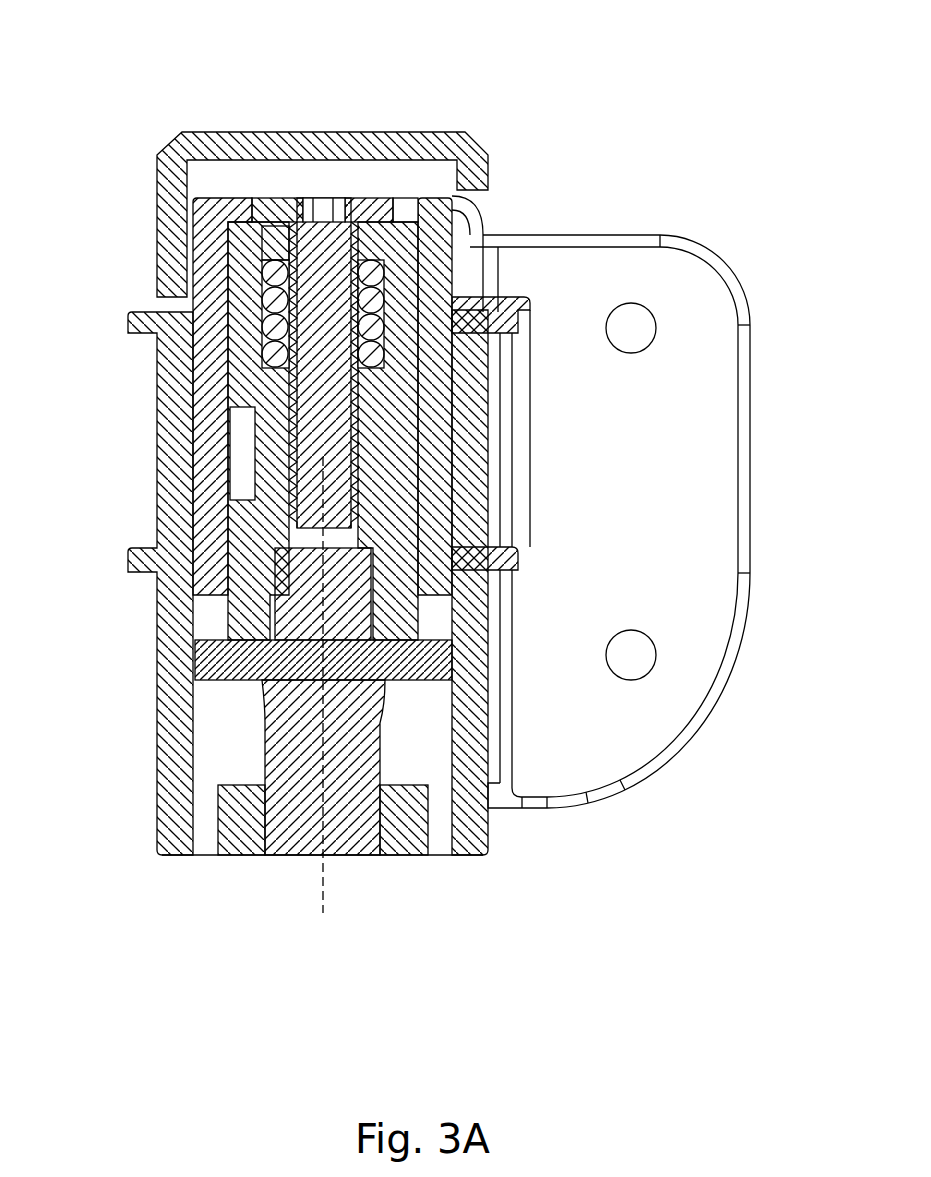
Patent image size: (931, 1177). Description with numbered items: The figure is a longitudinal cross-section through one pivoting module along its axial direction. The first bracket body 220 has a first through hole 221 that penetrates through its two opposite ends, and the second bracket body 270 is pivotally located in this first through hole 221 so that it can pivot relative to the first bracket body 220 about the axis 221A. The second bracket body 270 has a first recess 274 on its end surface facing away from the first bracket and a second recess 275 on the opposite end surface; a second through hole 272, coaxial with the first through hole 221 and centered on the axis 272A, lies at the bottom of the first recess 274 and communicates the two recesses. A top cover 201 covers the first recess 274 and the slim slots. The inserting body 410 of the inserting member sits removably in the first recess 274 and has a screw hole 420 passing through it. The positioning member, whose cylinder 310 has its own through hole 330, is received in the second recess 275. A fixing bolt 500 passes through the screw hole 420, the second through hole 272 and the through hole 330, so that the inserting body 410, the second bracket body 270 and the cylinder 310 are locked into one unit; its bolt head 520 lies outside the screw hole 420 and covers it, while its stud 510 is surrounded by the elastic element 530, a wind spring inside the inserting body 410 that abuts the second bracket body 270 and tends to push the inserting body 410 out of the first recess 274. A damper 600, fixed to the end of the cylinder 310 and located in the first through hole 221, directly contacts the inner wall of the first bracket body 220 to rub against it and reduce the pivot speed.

The top cover 201 is at (415, 145).
The first bracket body 220 is at (264, 582).
The first through hole 221 is at (212, 733).
The central axis 221A is at (323, 888).
The second bracket body 270 is at (435, 483).
The second through hole 272 is at (367, 387).
The axis of the second through hole 272A is at (300, 530).
The first recess 274 is at (412, 200).
The second recess 275 is at (248, 460).
The cylinder 310 is at (240, 600).
The through hole 330 is at (293, 536).
The inserting body 410 is at (229, 431).
The screw hole 420 is at (283, 240).
The fixing bolt 500 is at (310, 266).
The stud 510 is at (322, 213).
The bolt head 520 is at (295, 215).
The elastic element 530 is at (278, 356).
The damper 600 is at (287, 762).